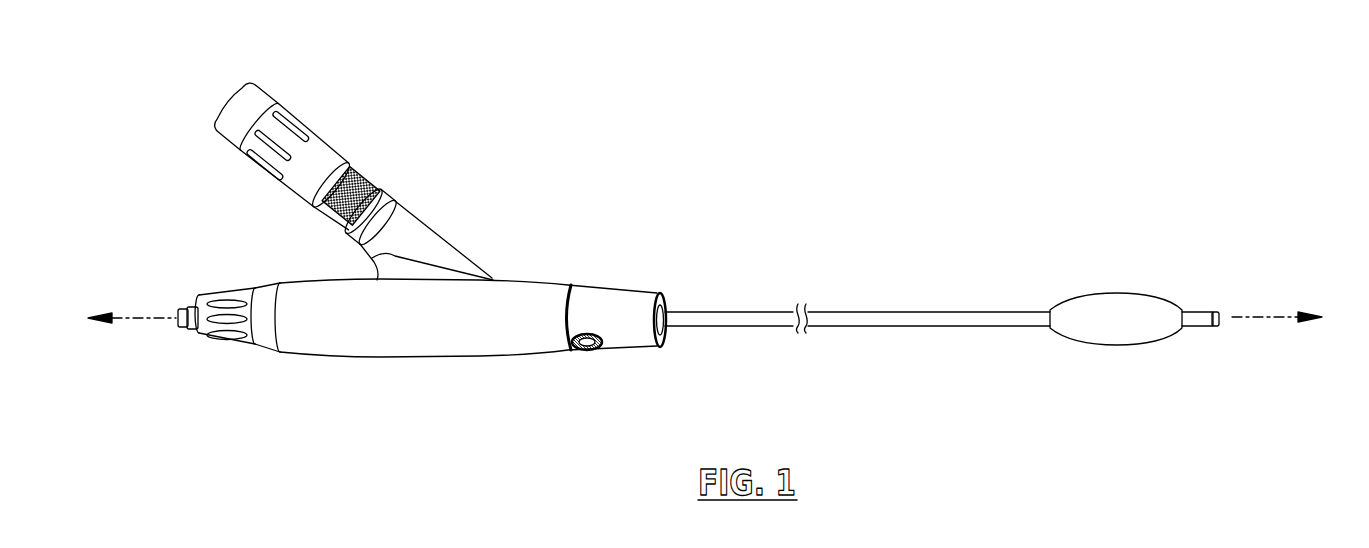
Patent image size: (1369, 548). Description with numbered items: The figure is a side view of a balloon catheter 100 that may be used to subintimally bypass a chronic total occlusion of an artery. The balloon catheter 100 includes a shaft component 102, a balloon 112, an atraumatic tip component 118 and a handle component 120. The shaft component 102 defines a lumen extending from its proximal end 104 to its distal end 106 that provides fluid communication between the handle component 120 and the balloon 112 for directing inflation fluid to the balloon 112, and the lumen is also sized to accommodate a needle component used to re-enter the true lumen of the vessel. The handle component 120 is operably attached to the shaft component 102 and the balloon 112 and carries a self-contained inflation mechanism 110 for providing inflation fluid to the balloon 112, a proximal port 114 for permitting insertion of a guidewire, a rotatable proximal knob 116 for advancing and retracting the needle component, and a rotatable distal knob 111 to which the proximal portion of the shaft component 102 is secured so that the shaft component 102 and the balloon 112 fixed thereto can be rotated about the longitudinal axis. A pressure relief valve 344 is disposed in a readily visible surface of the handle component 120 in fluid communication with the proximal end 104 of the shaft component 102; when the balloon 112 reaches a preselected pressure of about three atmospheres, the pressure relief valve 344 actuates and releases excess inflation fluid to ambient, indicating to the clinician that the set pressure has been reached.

The balloon catheter 100 is at (890, 98).
The shaft component 102 is at (845, 289).
The proximal end 104 is at (668, 330).
The distal end 106 is at (1045, 328).
The self-contained inflation mechanism 110 is at (347, 131).
The rotatable distal knob 111 is at (623, 293).
The balloon 112 is at (1125, 302).
The proximal port 114 is at (165, 340).
The rotatable proximal knob 116 is at (227, 344).
The atraumatic tip component 118 is at (1200, 328).
The handle component 120 is at (525, 194).
The pressure relief valve 344 is at (578, 369).